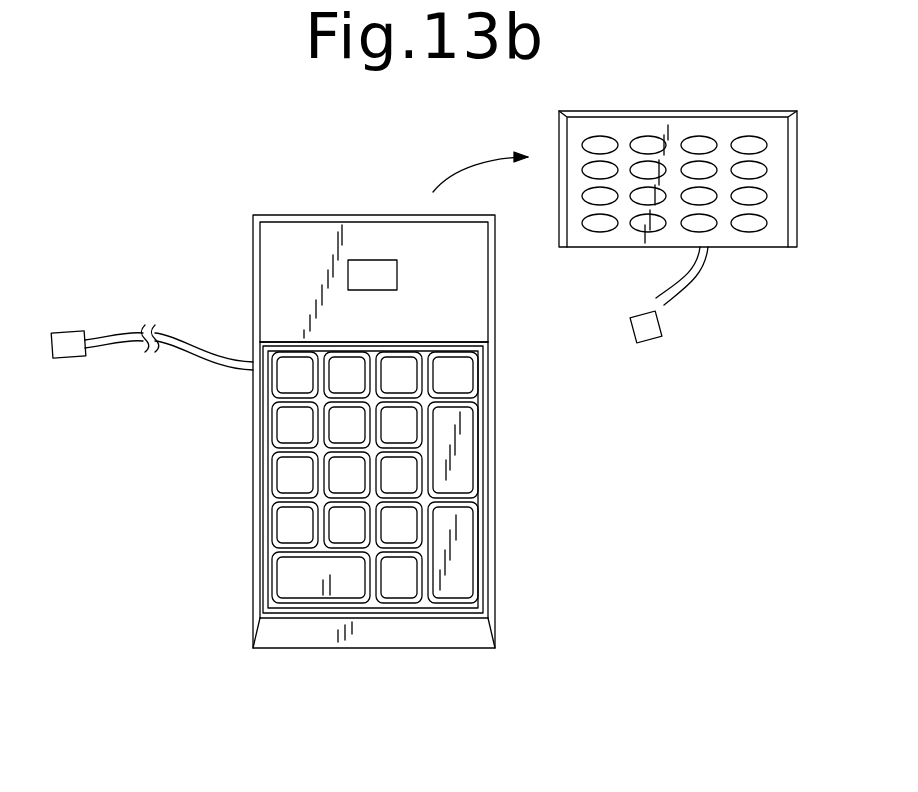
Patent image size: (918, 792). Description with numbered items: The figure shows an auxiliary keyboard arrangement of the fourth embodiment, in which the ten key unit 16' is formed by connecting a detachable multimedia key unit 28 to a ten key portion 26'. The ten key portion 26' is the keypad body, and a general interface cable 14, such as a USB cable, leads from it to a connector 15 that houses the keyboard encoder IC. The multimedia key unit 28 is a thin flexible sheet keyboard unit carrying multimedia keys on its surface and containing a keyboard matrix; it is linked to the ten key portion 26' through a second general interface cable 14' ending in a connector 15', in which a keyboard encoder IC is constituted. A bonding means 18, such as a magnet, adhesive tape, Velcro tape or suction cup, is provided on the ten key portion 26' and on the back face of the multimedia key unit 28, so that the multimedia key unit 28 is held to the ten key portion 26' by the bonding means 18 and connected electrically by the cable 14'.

The general interface cable 14 is at (169, 373).
The connector 15 is at (70, 379).
The ten key unit 16' is at (301, 431).
The bonding means 18 is at (373, 260).
The ten key portion 26' is at (495, 459).
The multimedia key unit 28 is at (724, 110).
The general interface cable 14' is at (720, 276).
The connector 15' is at (695, 329).